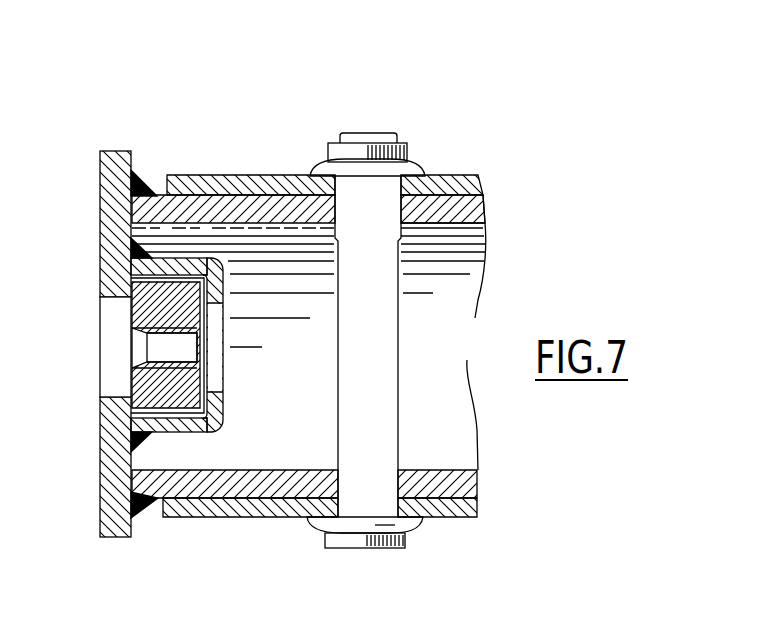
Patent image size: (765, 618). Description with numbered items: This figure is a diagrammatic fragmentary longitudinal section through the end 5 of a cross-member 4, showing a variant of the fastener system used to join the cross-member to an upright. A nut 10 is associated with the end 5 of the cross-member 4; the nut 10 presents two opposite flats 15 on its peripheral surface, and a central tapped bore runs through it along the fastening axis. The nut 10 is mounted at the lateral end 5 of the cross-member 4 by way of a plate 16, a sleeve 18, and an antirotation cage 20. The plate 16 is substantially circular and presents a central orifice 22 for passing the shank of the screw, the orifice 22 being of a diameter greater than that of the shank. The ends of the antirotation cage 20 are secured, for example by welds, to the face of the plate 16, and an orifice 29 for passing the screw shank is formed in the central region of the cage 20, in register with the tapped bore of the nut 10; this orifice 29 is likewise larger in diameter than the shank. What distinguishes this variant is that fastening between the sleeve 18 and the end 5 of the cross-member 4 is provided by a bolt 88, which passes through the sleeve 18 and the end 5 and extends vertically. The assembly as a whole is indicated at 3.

The fastening assembly 3 is at (434, 102).
The cross-member 4 is at (501, 178).
The end of the cross-member 5 is at (463, 177).
The nut 10 is at (210, 322).
The flats 15 is at (182, 264).
The plate 16 is at (108, 455).
The sleeve 18 is at (463, 222).
The antirotation cage 20 is at (234, 402).
The central orifice 22 is at (118, 300).
The orifice 29 is at (207, 365).
The bolt 88 is at (418, 373).